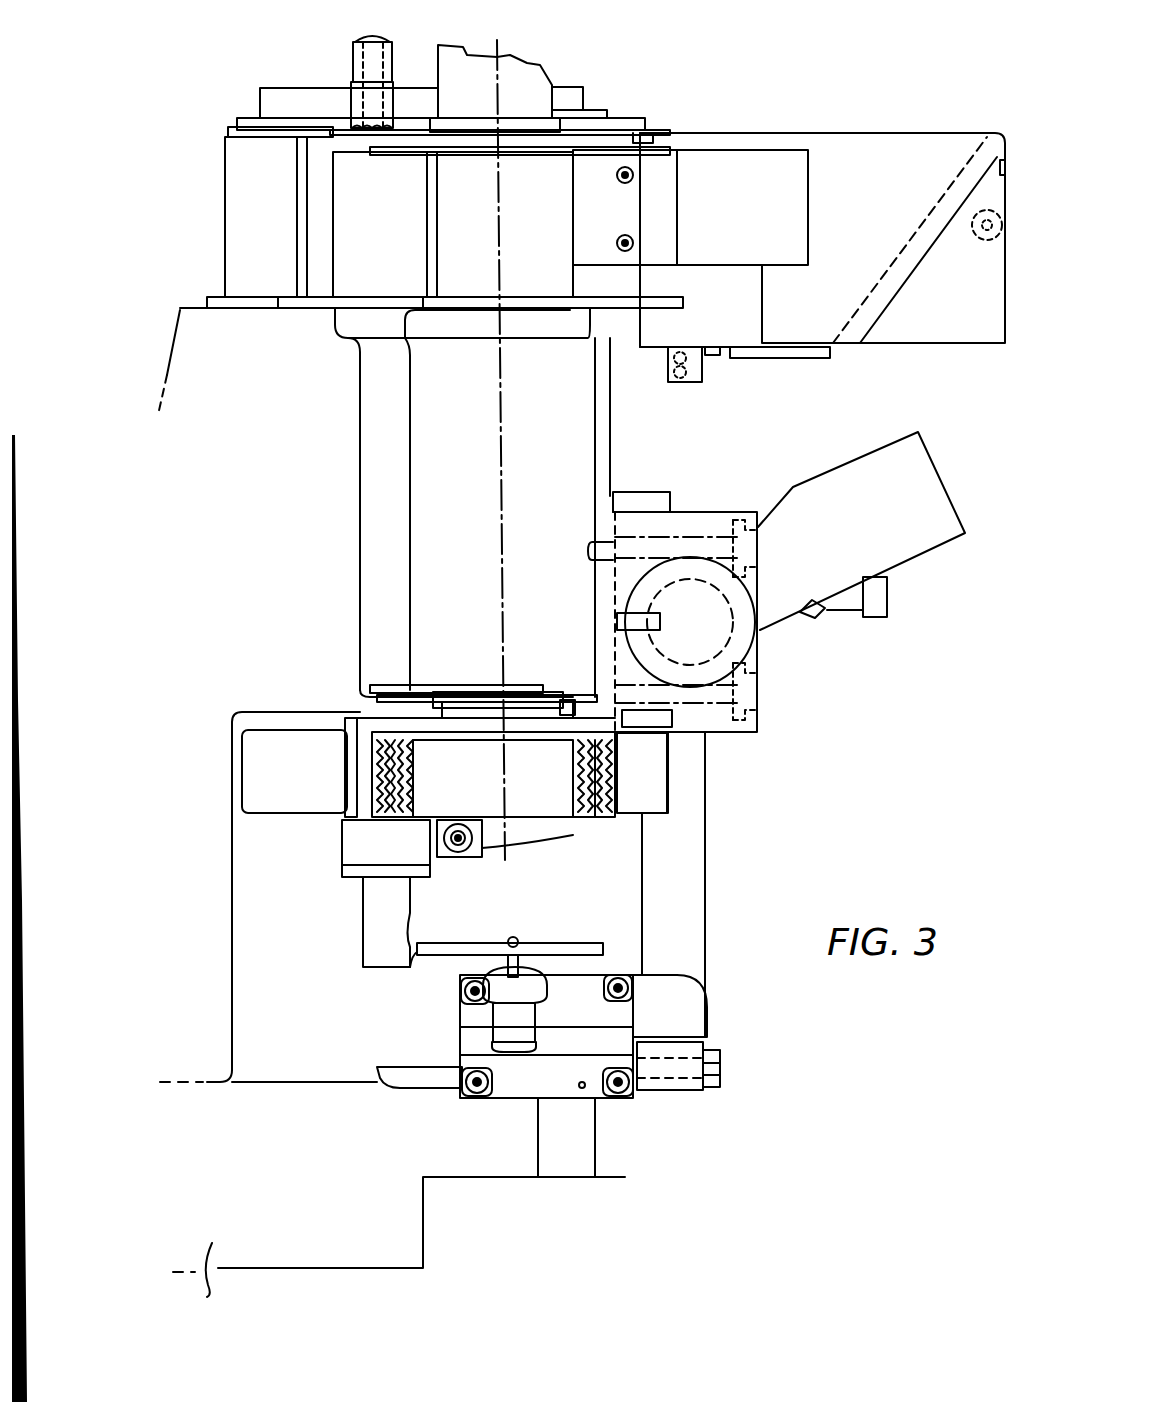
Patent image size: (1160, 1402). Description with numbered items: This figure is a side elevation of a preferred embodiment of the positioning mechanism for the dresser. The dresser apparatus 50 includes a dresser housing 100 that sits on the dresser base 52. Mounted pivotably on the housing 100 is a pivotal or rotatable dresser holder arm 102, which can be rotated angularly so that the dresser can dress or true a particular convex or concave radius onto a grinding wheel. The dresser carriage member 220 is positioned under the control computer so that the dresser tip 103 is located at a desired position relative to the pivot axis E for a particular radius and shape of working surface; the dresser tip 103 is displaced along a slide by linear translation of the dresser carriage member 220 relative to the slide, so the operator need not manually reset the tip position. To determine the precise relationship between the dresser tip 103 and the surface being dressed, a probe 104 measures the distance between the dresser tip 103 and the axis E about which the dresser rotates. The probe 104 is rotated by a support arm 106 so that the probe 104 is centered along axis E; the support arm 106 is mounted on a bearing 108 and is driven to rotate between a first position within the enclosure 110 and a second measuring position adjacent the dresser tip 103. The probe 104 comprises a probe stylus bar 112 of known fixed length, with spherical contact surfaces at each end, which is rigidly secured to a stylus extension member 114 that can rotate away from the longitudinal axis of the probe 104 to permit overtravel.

The dresser apparatus 50 is at (190, 198).
The dresser housing 100 is at (180, 308).
The enclosure 110 is at (852, 130).
The bearing 108 is at (740, 647).
The support arm 106 is at (707, 807).
The dresser carriage member 220 is at (347, 843).
The pivot axis E is at (510, 850).
The dresser holder arm 102 is at (365, 920).
The dresser tip 103 is at (412, 943).
The probe stylus bar 112 is at (415, 960).
The probe 104 is at (525, 982).
The stylus extension member 114 is at (490, 966).
The dresser base 52 is at (223, 1283).